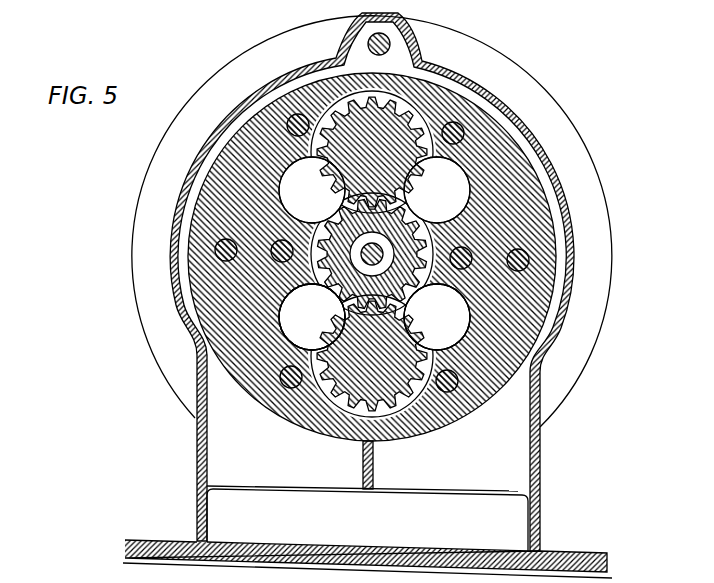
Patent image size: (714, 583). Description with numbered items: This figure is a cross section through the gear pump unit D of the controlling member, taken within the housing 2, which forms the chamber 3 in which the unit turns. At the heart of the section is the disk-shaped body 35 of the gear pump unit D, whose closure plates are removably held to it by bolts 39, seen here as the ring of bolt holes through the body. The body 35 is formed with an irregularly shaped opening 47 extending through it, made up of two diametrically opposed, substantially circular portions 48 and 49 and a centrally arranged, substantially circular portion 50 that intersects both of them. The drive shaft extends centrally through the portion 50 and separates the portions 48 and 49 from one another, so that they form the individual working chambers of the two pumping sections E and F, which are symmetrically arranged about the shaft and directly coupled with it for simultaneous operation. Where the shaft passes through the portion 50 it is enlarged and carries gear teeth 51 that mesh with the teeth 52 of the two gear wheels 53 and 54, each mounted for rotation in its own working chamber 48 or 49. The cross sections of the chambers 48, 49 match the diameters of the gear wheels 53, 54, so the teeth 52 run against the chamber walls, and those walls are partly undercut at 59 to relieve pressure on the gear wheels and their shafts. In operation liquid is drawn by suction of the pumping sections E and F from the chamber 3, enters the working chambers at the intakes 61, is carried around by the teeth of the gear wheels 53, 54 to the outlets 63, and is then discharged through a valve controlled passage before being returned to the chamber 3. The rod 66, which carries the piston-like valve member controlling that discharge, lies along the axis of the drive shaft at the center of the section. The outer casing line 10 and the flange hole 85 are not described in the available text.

The housing 2 is at (538, 471).
The chamber 3 is at (563, 289).
The outer casing 10 is at (351, 40).
The disk-shaped body 35 is at (222, 158).
The bolts 39 is at (288, 112).
The irregularly shaped opening 47 is at (297, 333).
The circular portion 48 is at (410, 110).
The circular portion 49 is at (417, 407).
The central circular portion 50 is at (327, 273).
The gear teeth 51 is at (404, 287).
The teeth 52 is at (422, 178).
The gear wheel 53 is at (333, 172).
The gear wheel 54 is at (345, 327).
The undercut 59 is at (420, 117).
The intakes 61 is at (460, 190).
The outlets 63 is at (290, 173).
The rod 66 is at (383, 247).
The flange bolt hole 85 is at (393, 47).
The gear pump unit D is at (545, 232).
The pumping section E is at (433, 153).
The pumping section F is at (430, 364).